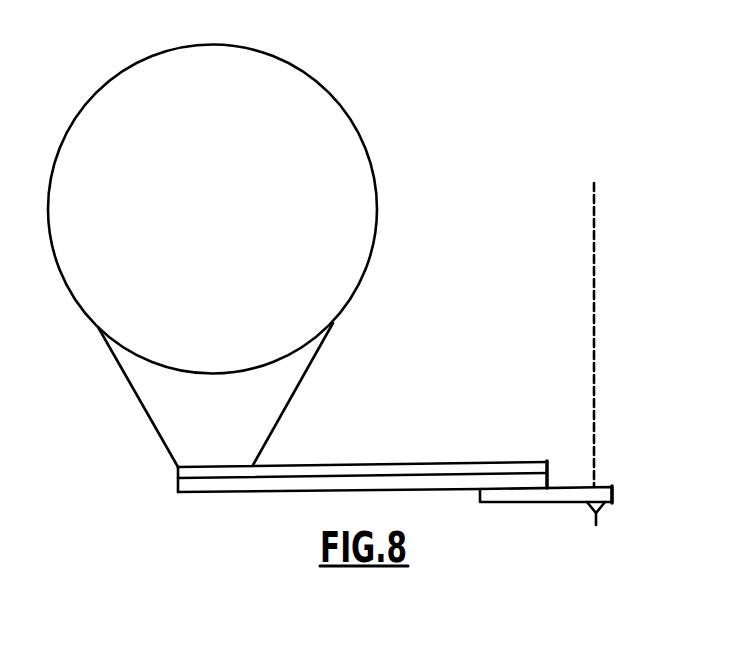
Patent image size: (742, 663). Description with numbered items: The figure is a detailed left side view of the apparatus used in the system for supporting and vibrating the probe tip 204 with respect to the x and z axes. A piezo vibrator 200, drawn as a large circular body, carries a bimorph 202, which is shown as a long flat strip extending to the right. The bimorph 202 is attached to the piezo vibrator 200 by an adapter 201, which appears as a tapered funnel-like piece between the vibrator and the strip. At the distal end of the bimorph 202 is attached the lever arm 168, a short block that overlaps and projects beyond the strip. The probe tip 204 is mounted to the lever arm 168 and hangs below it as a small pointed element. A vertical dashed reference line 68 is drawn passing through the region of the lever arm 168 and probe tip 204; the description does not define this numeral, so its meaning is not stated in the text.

The piezo vibrator 200 is at (378, 186).
The adapter 201 is at (133, 397).
The bimorph 202 is at (527, 462).
The lever arm 168 is at (614, 490).
The axis line 68 is at (594, 229).
The probe tip 204 is at (600, 507).